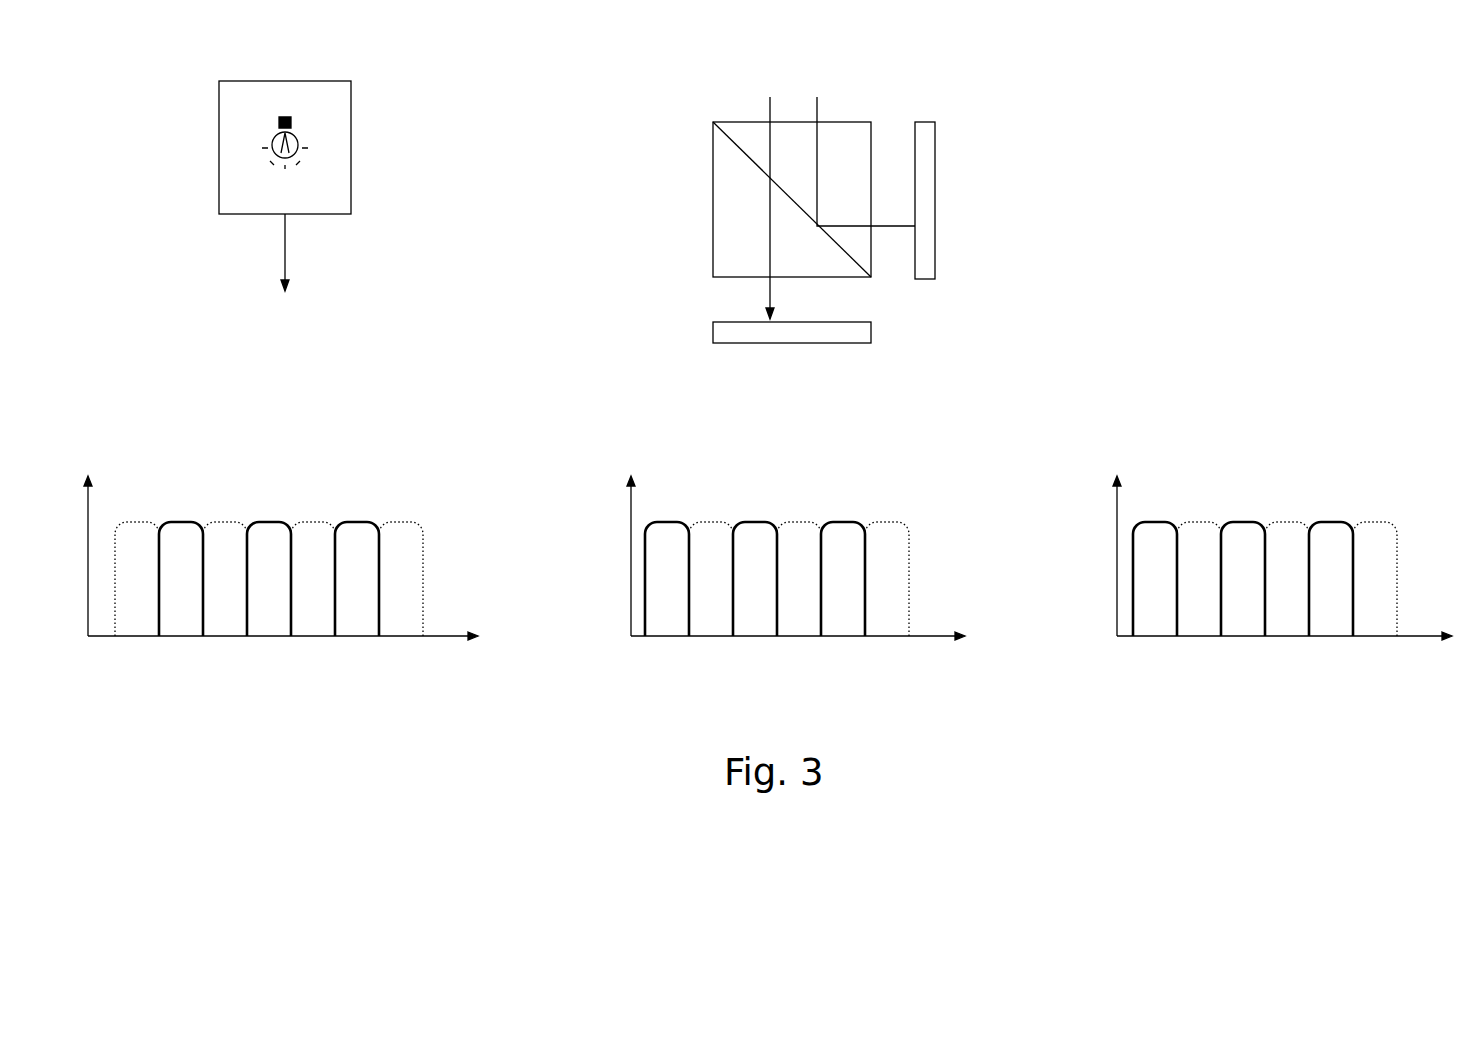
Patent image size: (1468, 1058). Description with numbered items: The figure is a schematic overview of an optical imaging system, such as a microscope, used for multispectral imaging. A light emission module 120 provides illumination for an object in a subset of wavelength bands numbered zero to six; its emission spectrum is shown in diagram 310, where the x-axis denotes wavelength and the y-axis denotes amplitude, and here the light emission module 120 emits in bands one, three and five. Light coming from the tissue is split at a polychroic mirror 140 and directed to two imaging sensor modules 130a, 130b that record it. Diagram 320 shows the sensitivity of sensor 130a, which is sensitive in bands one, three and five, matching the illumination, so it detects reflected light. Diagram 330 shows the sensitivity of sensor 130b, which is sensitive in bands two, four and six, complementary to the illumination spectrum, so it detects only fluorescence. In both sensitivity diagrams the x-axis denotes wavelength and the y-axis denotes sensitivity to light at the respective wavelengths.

The light emission module 120 is at (351, 214).
The polychroic mirror 140 is at (713, 122).
The imaging sensor module 130a is at (783, 343).
The imaging sensor module 130b is at (935, 279).
The diagram 310 is at (336, 636).
The diagram 320 is at (821, 636).
The diagram 330 is at (1265, 636).